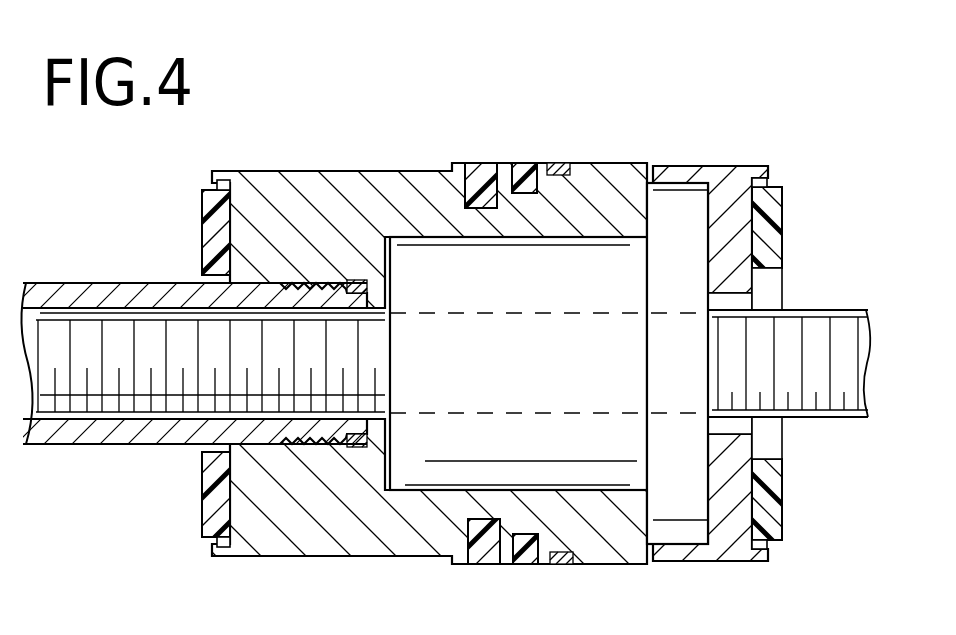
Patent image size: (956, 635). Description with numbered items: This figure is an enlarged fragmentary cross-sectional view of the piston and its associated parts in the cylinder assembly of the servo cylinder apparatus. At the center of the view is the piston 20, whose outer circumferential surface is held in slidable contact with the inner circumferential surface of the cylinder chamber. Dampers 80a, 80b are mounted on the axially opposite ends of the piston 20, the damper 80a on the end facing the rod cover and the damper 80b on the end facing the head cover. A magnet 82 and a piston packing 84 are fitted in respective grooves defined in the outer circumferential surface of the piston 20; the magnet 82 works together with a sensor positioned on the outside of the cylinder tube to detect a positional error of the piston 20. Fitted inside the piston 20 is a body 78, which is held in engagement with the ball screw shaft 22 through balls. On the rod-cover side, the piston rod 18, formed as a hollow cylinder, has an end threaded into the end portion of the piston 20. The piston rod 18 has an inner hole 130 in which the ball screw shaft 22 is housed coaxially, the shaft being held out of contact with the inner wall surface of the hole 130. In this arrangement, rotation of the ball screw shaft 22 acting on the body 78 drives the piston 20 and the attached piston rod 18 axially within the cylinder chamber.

The piston rod 18 is at (73, 290).
The piston 20 is at (310, 182).
The ball screw shaft 22 is at (822, 402).
The body 78 is at (596, 268).
The damper 80a is at (213, 232).
The damper 80b is at (778, 224).
The magnet 82 is at (484, 173).
The piston packing 84 is at (523, 172).
The inner hole 130 is at (132, 419).